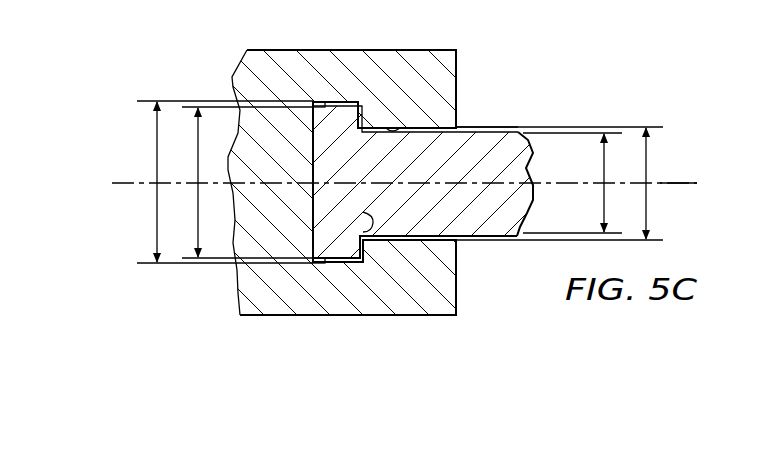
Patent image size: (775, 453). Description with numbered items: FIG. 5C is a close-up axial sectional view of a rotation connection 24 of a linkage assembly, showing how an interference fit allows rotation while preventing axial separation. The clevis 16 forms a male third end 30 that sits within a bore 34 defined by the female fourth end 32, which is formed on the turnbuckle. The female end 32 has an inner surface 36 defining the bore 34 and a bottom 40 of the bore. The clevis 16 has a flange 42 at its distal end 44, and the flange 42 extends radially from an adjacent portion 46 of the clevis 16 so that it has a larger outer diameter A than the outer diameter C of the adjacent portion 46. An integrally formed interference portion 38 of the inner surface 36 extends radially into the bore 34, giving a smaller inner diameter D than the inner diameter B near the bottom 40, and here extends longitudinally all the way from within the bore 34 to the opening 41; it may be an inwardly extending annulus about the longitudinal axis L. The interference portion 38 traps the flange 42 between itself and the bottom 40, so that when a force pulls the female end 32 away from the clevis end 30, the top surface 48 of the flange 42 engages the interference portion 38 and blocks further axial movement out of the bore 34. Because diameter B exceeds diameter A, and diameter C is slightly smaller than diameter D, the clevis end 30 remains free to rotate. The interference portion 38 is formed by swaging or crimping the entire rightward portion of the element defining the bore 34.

The clevis 16 is at (522, 157).
The rotation connection 24 is at (232, 46).
The male third end 30 is at (403, 170).
The female fourth end 32 is at (287, 57).
The bore 34 is at (418, 126).
The inner surface 36 is at (466, 128).
The interference portion 38 is at (421, 60).
The bottom 40 is at (313, 190).
The opening 41 is at (460, 244).
The flange 42 is at (318, 112).
The distal end 44 is at (318, 262).
The adjacent portion 46 is at (385, 127).
The top surface 48 is at (364, 236).
The outer diameter of the flange A is at (197, 208).
The inner diameter of the bore near the bottom B is at (157, 206).
The outer diameter of the adjacent portion C is at (604, 193).
The inner diameter at the interference portion D is at (646, 208).
The longitudinal axis L is at (692, 183).